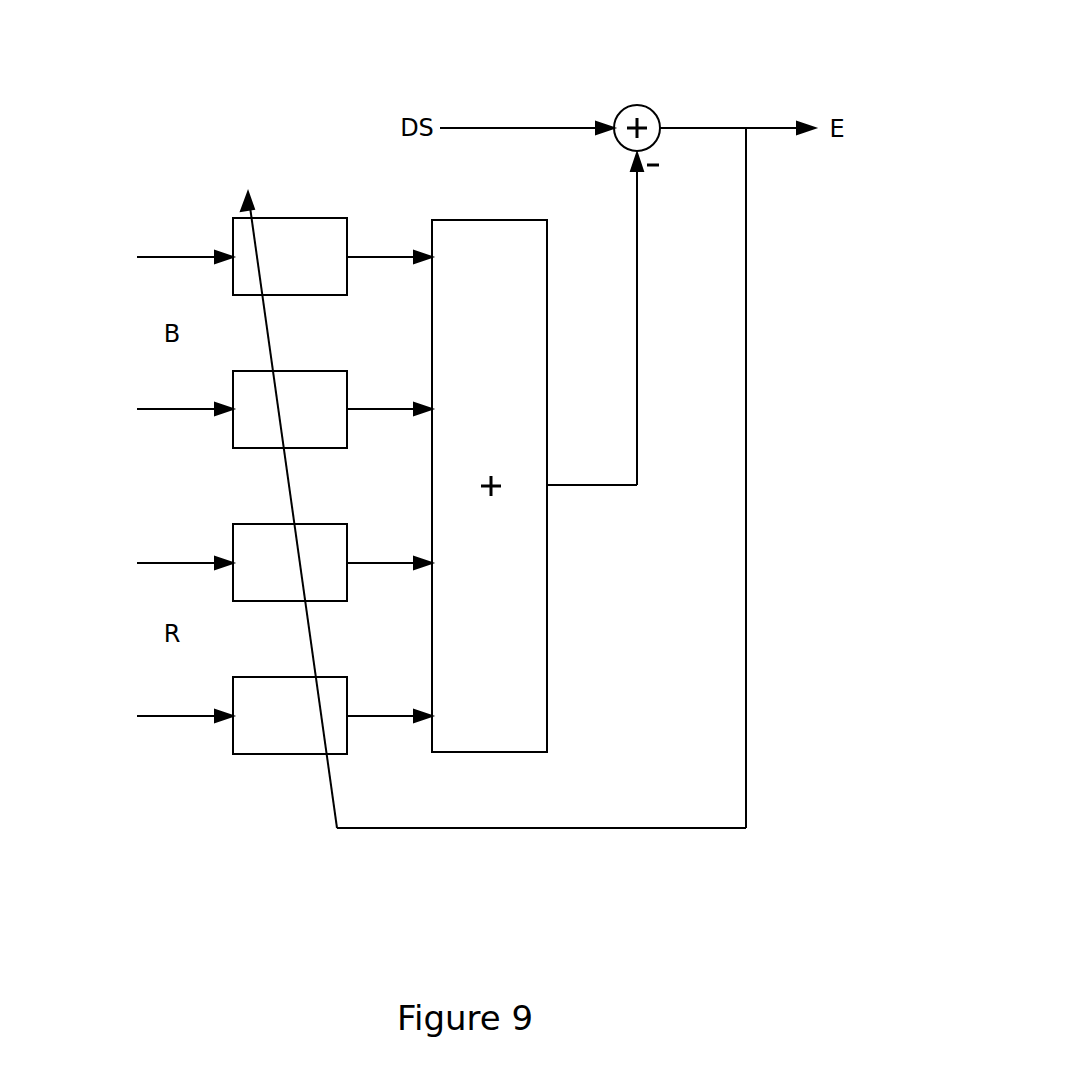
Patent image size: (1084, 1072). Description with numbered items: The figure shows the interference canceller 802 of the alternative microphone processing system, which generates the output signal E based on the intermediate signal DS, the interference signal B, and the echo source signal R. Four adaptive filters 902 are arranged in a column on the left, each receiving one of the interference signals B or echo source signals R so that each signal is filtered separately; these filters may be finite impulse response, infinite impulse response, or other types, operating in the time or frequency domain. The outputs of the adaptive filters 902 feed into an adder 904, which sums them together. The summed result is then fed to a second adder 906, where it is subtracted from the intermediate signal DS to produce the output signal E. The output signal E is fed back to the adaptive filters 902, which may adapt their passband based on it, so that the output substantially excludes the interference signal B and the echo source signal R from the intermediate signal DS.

The interference canceller 802 is at (765, 38).
The adaptive filters 902 is at (292, 217).
The adder 904 is at (492, 218).
The adder 906 is at (652, 109).